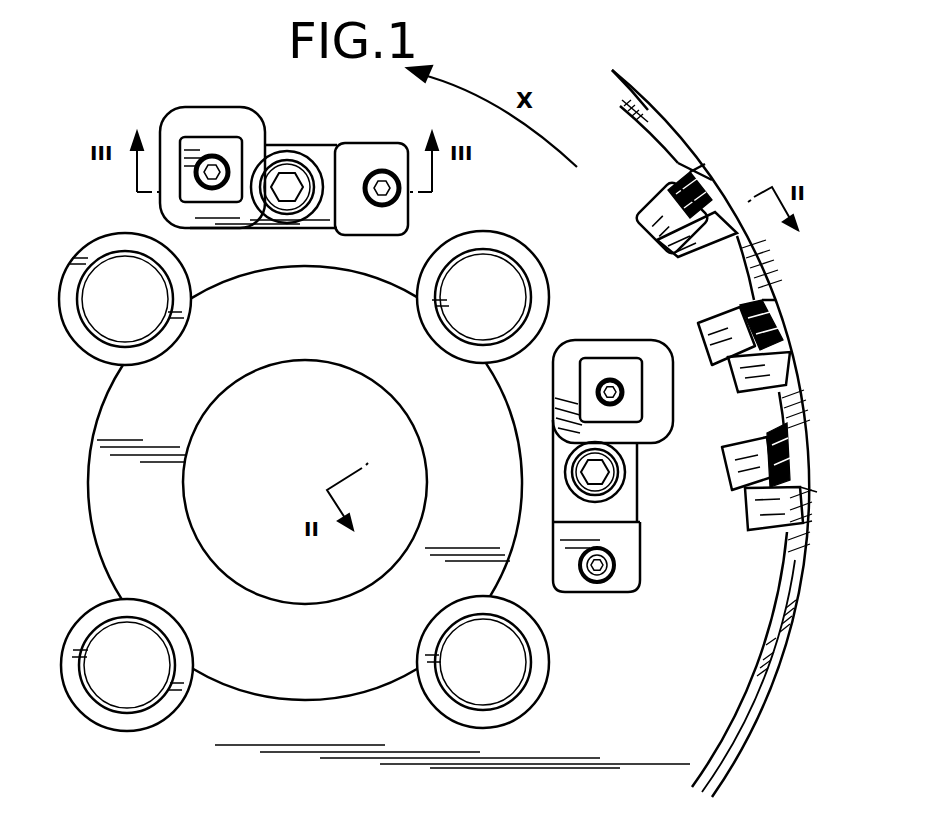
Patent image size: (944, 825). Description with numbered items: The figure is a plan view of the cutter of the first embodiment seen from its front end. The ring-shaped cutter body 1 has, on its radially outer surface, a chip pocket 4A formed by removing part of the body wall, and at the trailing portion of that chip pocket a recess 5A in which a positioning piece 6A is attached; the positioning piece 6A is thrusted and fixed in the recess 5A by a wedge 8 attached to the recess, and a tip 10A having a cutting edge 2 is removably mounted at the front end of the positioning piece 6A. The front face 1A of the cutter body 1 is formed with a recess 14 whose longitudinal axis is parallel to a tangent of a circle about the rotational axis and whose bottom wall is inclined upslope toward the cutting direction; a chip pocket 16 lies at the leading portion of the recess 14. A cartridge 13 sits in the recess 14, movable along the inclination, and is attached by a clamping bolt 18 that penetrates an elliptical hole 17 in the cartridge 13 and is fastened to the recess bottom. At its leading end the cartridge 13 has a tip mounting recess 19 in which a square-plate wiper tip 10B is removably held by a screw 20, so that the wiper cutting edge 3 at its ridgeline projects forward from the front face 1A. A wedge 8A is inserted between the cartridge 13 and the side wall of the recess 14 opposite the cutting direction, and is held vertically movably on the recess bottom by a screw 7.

The cutter body 1 is at (678, 130).
The front face of the cutter body 1A is at (720, 700).
The cutting edge 2 is at (790, 313).
The wiper cutting edge 3 is at (607, 358).
The chip pocket 4A is at (762, 292).
The recess 5A is at (652, 232).
The positioning piece 6A is at (800, 377).
The screw 7 is at (797, 312).
The wedge 8 is at (662, 203).
The wedge 8A is at (627, 553).
The tip 10A is at (797, 352).
The wiper tip 10B is at (632, 365).
The cartridge 13 is at (563, 450).
The recess 14 is at (637, 500).
The chip pocket 16 is at (573, 347).
The hole 17 is at (587, 493).
The clamping bolt 18 is at (587, 473).
The tip mounting recess 19 is at (630, 397).
The screw 20 is at (630, 387).